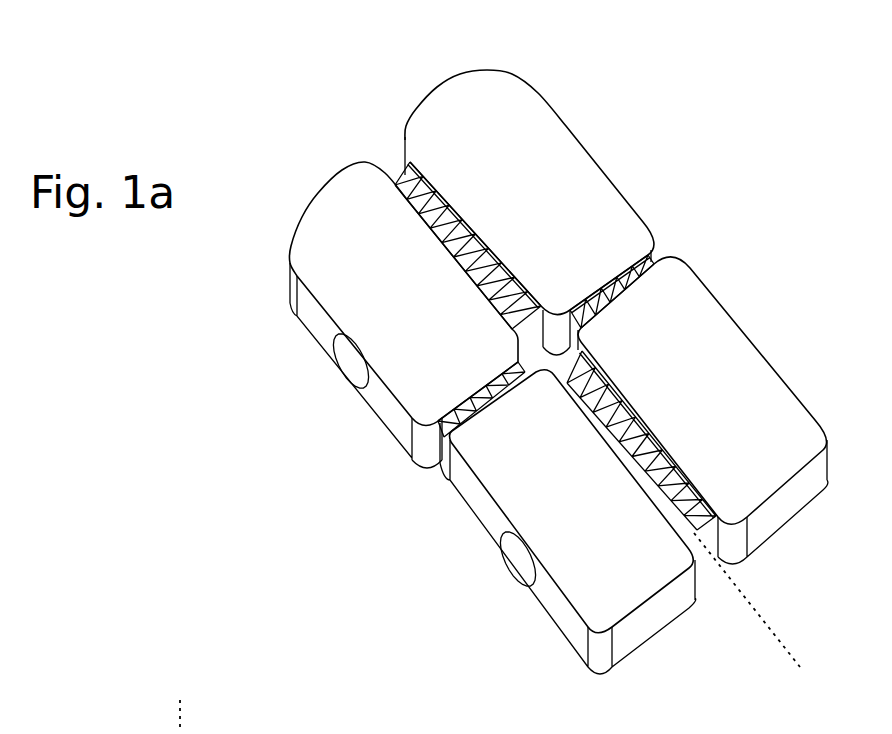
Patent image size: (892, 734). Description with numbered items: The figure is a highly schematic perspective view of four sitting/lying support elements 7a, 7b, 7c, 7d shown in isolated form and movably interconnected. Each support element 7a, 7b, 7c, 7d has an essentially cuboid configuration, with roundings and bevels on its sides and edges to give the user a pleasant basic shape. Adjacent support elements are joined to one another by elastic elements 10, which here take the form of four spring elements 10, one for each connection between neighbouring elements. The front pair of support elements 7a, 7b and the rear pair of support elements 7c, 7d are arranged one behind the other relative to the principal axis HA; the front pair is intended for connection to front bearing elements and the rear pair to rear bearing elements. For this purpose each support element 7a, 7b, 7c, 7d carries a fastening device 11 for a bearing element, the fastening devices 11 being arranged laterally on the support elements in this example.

The sitting/lying support element 7a is at (403, 390).
The sitting/lying support element 7b is at (547, 143).
The sitting/lying support element 7c is at (557, 577).
The sitting/lying support element 7d is at (700, 323).
The elastic element 10 is at (403, 173).
The fastening device 11 is at (350, 357).
The principal axis HA is at (505, 632).